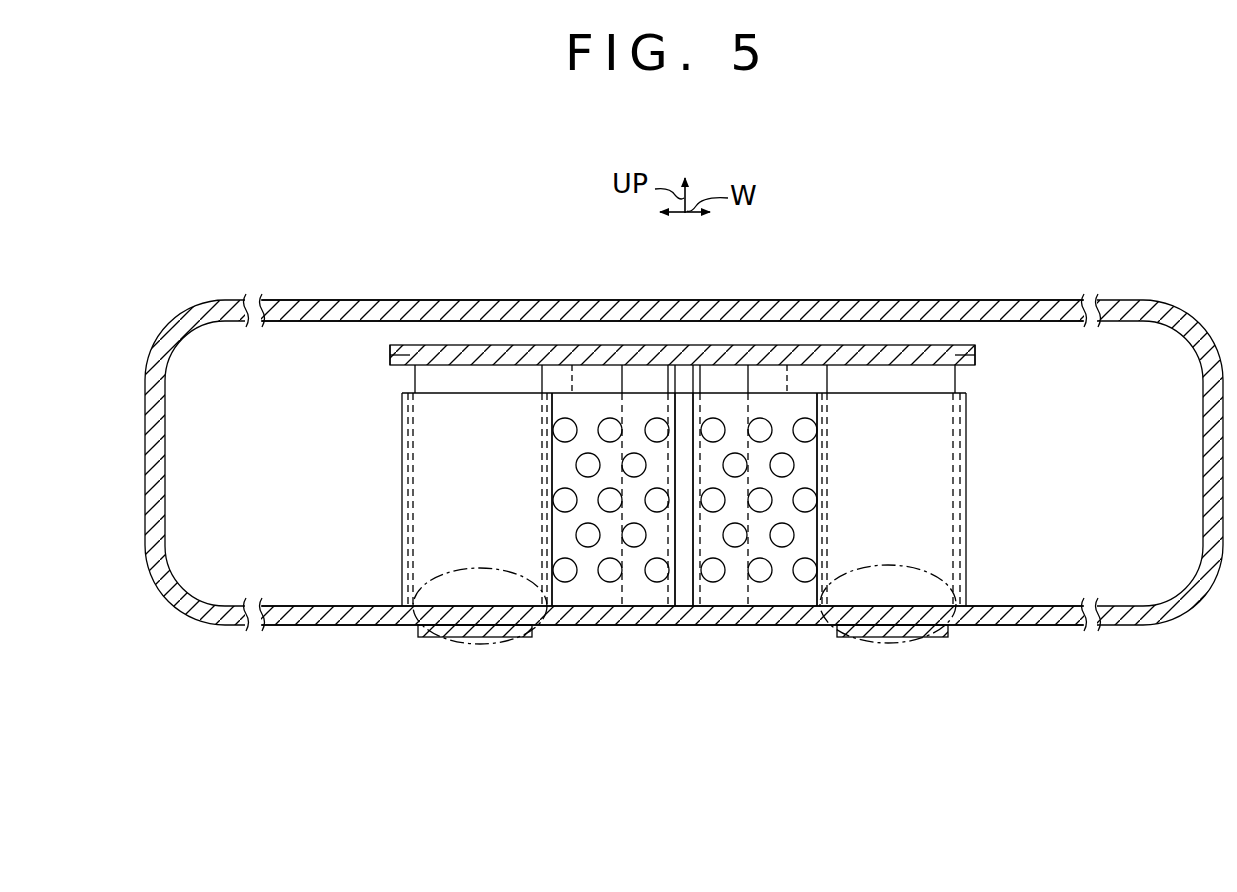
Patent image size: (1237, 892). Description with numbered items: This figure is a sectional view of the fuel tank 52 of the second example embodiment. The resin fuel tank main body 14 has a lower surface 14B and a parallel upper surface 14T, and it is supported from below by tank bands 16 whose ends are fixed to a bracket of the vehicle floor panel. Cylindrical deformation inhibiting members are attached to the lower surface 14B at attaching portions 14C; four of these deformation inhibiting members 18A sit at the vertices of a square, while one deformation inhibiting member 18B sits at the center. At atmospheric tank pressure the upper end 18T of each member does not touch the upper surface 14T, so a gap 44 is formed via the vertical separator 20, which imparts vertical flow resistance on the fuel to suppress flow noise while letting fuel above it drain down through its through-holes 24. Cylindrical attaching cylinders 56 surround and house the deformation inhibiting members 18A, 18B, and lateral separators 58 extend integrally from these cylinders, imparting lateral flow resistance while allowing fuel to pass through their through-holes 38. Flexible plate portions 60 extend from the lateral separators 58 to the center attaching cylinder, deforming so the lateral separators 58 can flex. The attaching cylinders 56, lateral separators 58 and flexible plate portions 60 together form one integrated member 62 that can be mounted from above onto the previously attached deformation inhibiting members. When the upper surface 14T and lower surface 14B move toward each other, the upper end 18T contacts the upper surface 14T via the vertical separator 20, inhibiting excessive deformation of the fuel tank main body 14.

The fuel tank main body 14 is at (172, 608).
The upper surface 14T is at (1010, 301).
The lower surface 14B is at (1062, 621).
The attaching portions 14C is at (462, 647).
The tank band 16 is at (445, 630).
The deformation inhibiting members 18A is at (416, 386).
The deformation inhibiting member 18B is at (648, 353).
The upper end 18T is at (396, 355).
The vertical separator 20 is at (548, 355).
The through-holes 24 is at (574, 355).
The through-holes 38 is at (604, 572).
The gap 44 is at (407, 330).
The fuel tank 52 is at (1063, 205).
The attaching cylinders 56 is at (401, 411).
The lateral separators 58 is at (578, 598).
The flexible plate portions 60 is at (672, 623).
The integrated member 62 is at (399, 505).